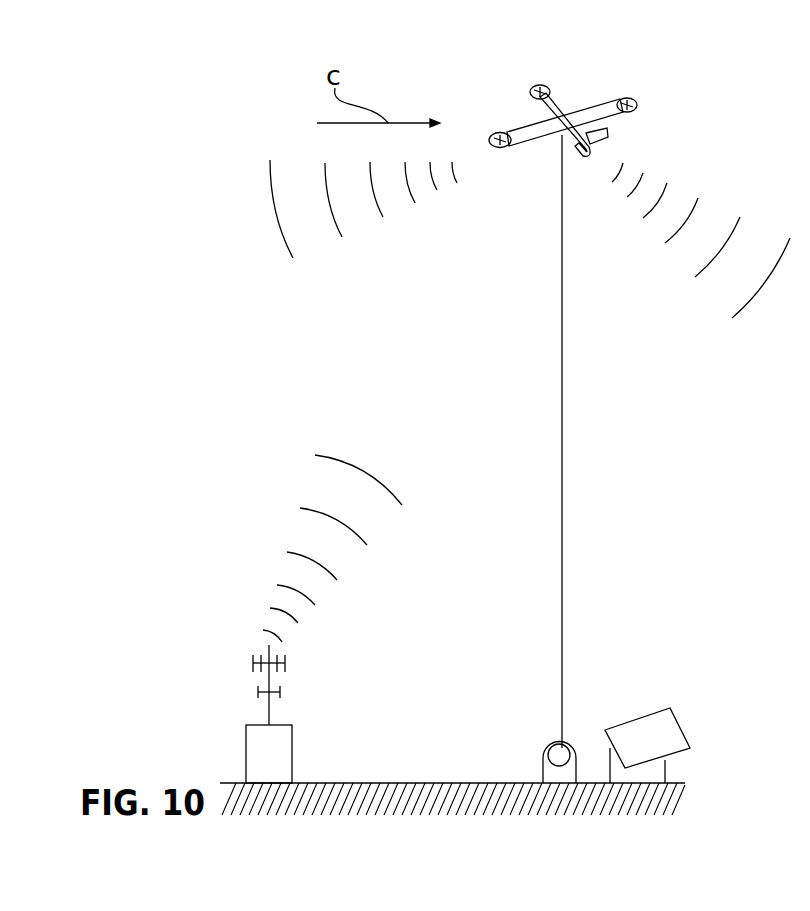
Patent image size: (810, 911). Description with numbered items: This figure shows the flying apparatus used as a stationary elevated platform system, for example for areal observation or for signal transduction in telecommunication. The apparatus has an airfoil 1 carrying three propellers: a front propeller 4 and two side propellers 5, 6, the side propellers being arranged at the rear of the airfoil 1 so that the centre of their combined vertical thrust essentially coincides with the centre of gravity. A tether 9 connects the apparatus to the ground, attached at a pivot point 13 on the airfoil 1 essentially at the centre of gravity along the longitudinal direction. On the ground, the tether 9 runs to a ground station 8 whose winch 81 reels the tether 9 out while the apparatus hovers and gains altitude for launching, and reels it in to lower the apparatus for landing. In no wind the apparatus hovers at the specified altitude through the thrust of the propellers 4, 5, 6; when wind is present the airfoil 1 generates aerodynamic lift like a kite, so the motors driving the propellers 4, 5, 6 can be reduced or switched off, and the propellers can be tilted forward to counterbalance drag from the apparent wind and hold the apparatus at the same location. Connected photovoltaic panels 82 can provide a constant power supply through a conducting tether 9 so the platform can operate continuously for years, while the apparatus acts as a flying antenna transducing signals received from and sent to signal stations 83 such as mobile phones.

The airfoil 1 is at (586, 114).
The front propeller 4 is at (539, 85).
The side propeller 5 is at (627, 98).
The side propeller 6 is at (500, 133).
The pivot point 13 is at (558, 135).
The tether 9 is at (563, 447).
The ground station 8 is at (641, 714).
The winch 81 is at (555, 750).
The photovoltaic panel 82 is at (672, 728).
The signal station 83 is at (282, 757).